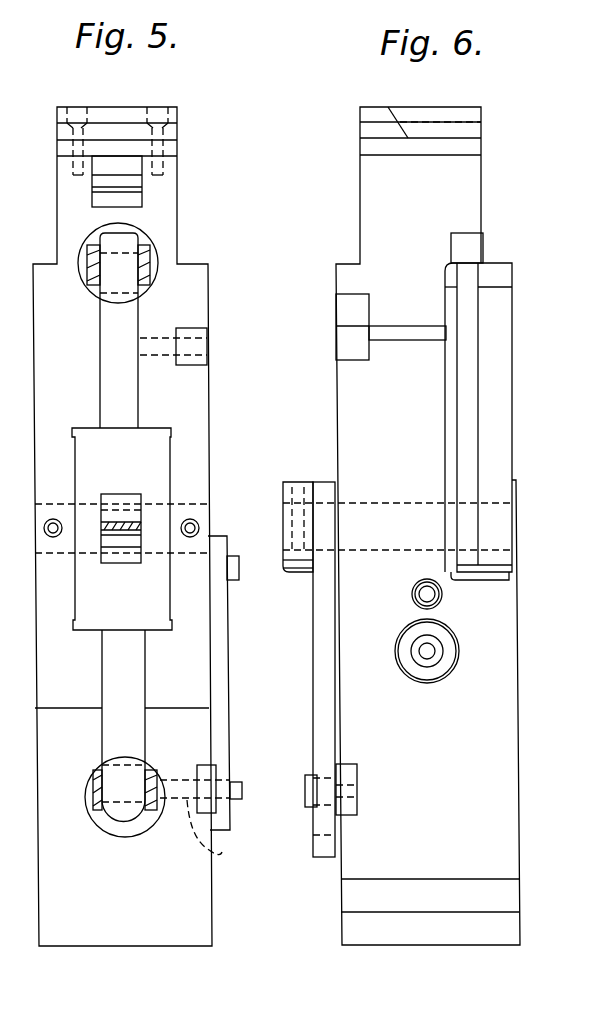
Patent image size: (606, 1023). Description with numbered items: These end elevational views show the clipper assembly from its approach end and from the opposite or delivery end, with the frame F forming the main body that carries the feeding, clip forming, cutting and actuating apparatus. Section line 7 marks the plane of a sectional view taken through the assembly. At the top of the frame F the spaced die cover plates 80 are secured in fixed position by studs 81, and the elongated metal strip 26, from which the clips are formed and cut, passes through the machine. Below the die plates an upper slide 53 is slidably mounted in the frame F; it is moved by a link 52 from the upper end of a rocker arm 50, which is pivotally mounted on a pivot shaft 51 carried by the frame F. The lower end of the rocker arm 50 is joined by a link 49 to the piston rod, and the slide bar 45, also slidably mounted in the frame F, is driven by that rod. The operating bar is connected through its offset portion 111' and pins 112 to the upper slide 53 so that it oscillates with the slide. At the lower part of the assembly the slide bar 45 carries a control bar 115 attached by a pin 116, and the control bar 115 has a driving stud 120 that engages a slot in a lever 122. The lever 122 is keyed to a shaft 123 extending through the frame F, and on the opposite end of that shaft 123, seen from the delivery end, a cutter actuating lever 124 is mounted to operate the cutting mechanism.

In FIG. 5, the section line 7- 7 is at (99, 85).
In FIG. 5, the frame F is at (210, 297).
In FIG. 6, the frame F is at (484, 200).
In FIG. 5, the die cover plates 80 is at (172, 134).
In FIG. 5, the studs 81 is at (70, 150).
In FIG. 5, the upper slide 53 is at (140, 253).
In FIG. 5, the link 52 is at (143, 268).
In FIG. 5, the pins 112 is at (162, 335).
In FIG. 5, the offset portion 111' is at (225, 356).
In FIG. 5, the pivot shaft 51 is at (190, 500).
In FIG. 5, the elongated metal strip 26 is at (135, 528).
In FIG. 5, the rocker arm 50 is at (133, 672).
In FIG. 5, the link 49 is at (150, 782).
In FIG. 5, the slide bar 45 is at (148, 803).
In FIG. 5, the control bar 115 is at (215, 768).
In FIG. 6, the control bar 115 is at (346, 789).
In FIG. 5, the driving stud 120 is at (241, 787).
In FIG. 6, the driving stud 120 is at (306, 789).
In FIG. 5, the pin 116 is at (229, 832).
In FIG. 6, the cutter actuating lever 124 is at (472, 420).
In FIG. 6, the shaft 123 is at (497, 497).
In FIG. 6, the lever 122 is at (318, 668).